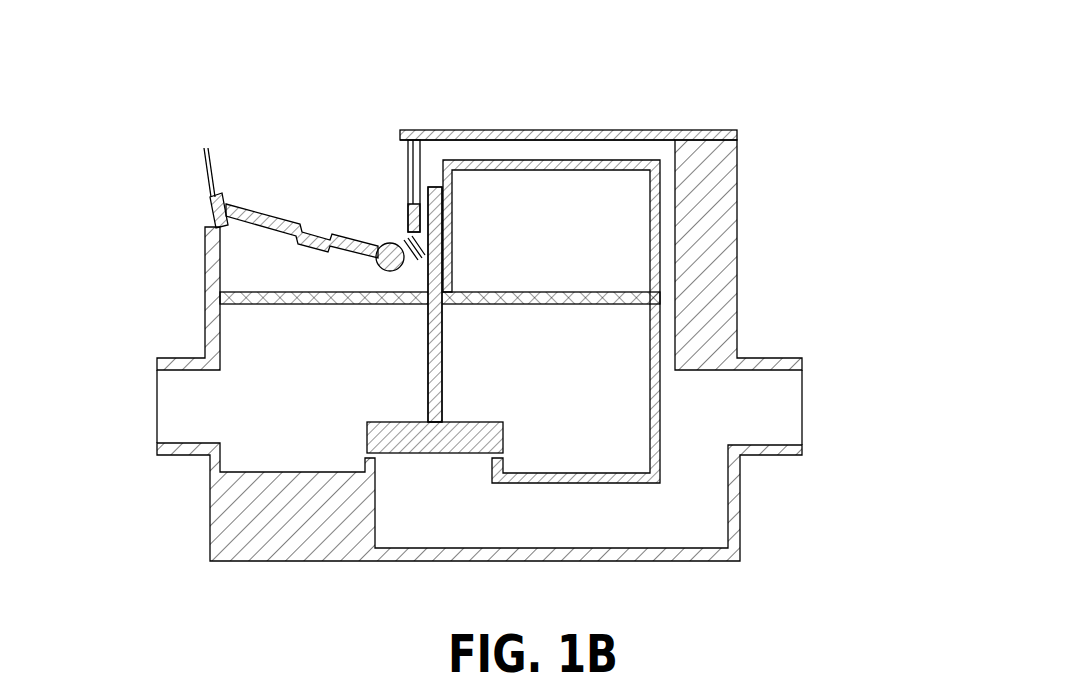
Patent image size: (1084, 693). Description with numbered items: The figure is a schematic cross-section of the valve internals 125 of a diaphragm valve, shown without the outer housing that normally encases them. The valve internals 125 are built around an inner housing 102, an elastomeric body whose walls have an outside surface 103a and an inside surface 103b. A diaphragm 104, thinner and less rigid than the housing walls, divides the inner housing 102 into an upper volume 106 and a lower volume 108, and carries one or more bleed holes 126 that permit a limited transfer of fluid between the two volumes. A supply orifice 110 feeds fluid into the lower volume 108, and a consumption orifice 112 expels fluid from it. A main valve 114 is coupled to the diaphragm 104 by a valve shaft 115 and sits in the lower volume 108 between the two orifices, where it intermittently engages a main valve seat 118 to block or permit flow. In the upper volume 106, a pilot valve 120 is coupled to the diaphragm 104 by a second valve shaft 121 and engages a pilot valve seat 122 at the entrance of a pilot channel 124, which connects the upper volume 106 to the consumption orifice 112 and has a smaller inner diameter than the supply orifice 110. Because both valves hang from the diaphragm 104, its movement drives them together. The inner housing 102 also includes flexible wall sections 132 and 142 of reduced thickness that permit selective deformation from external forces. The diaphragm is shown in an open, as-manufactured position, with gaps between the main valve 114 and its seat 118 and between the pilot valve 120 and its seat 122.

The inner housing 102 is at (745, 491).
The outside surface 103a is at (546, 127).
The inside surface 103b is at (552, 146).
The diaphragm 104 is at (228, 307).
The upper volume 106 is at (275, 284).
The lower volume 108 is at (402, 362).
The supply orifice 110 is at (156, 410).
The consumption orifice 112 is at (806, 413).
The main valve 114 is at (385, 433).
The valve shaft 115 is at (476, 304).
The main valve seat 118 is at (481, 457).
The pilot valve 120 is at (450, 197).
The valve shaft 121 is at (445, 266).
The pilot valve seat 122 is at (446, 150).
The pilot channel 124 is at (631, 141).
The valve internals 125 is at (831, 71).
The bleed hole 126 is at (292, 305).
The flexible wall section 132 is at (204, 210).
The flexible wall section 142 is at (410, 182).